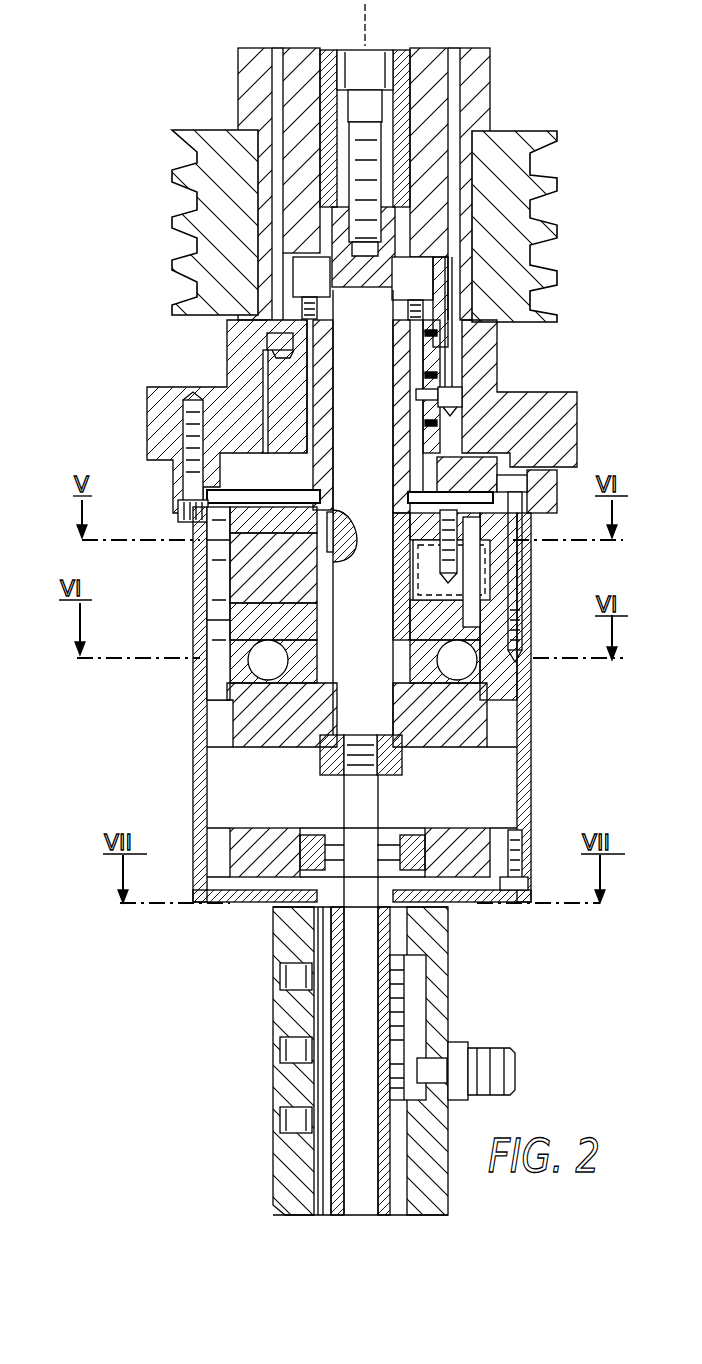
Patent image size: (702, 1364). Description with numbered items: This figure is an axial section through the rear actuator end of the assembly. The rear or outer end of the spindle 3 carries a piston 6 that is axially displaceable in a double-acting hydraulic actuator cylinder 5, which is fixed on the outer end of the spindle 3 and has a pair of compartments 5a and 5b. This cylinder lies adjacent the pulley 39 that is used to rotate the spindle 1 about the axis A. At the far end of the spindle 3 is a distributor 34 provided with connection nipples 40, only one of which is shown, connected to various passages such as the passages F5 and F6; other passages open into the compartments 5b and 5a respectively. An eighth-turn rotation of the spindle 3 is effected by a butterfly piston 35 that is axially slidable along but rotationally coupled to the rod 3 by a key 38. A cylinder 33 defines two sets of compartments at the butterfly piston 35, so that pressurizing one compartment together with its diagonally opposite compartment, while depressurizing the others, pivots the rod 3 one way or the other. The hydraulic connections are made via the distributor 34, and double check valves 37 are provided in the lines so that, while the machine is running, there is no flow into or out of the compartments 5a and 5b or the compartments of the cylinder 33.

The axis A is at (366, 12).
The spindle 3 is at (322, 80).
The passage F6 is at (455, 135).
The passage F5 is at (277, 221).
The pulley 39 is at (558, 263).
The spindle 1 is at (277, 378).
The key 38 is at (337, 533).
The butterfly piston 35 is at (250, 567).
The cylinder 33 is at (184, 593).
The double check valves 37 is at (265, 668).
The compartment 5b is at (488, 690).
The piston 6 is at (246, 736).
The compartment 5a is at (480, 795).
The double-acting hydraulic actuator cylinder 5 is at (186, 797).
The connection nipples 40 is at (493, 1064).
The distributor 34 is at (292, 1079).